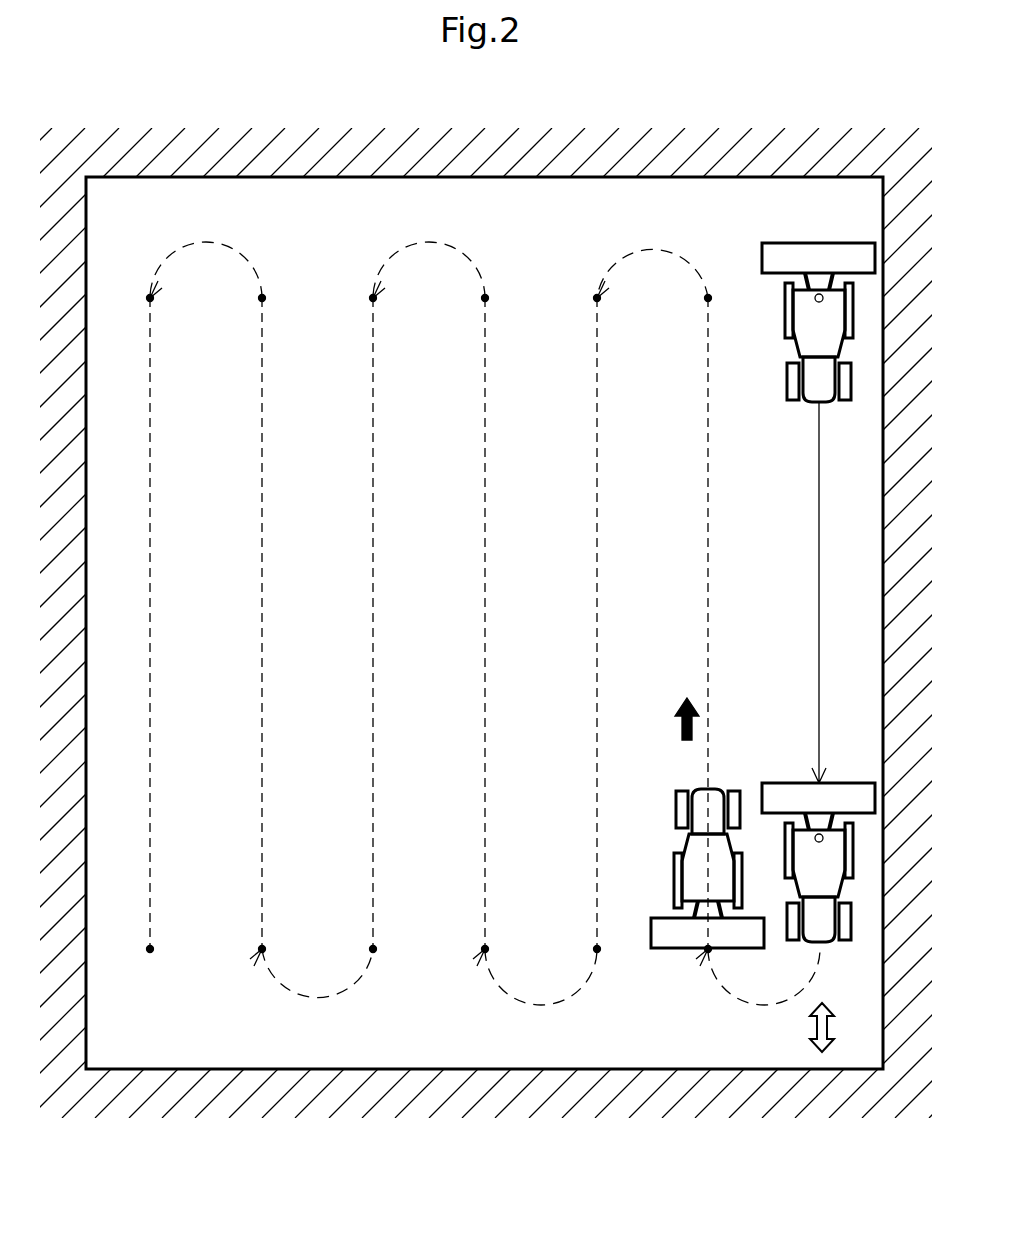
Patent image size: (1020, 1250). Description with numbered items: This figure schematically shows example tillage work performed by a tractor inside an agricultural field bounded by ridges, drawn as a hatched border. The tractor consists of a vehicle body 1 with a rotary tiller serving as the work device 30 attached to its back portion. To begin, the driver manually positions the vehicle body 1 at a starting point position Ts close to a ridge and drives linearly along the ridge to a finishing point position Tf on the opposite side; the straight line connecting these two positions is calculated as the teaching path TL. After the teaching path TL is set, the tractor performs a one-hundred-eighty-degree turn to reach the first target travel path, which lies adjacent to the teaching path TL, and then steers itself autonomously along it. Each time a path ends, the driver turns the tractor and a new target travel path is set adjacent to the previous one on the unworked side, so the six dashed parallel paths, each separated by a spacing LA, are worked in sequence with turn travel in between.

The vehicle body 1 is at (797, 349).
The work device 30 is at (793, 243).
The starting point position Ts is at (819, 293).
The finishing point position Tf is at (820, 833).
The teaching path TL is at (819, 607).
The line-to-line distance / work width LA is at (812, 1028).